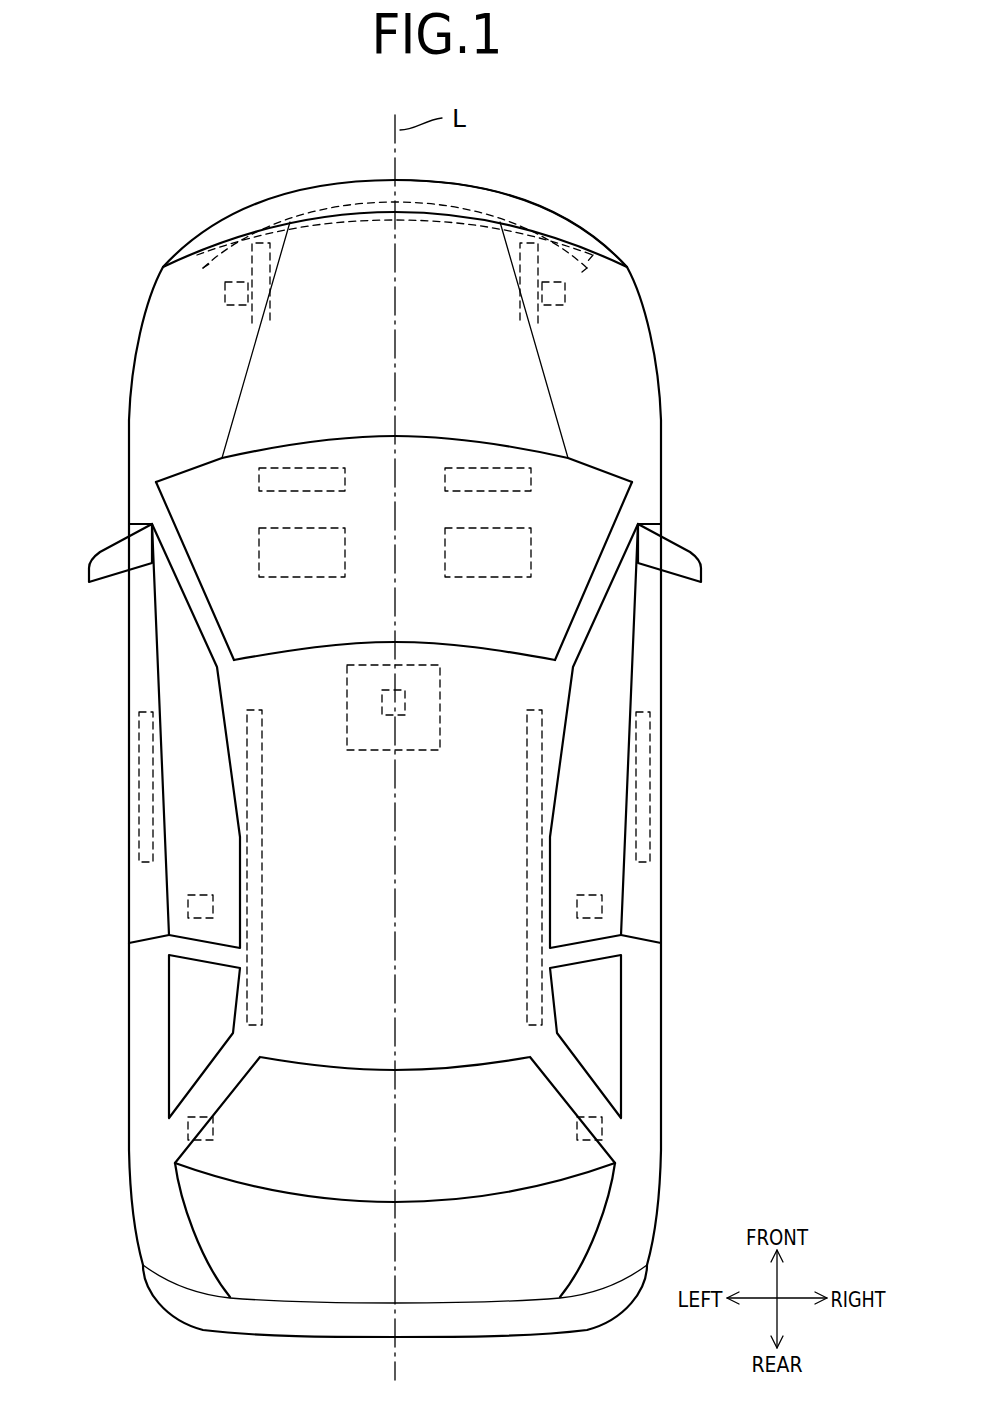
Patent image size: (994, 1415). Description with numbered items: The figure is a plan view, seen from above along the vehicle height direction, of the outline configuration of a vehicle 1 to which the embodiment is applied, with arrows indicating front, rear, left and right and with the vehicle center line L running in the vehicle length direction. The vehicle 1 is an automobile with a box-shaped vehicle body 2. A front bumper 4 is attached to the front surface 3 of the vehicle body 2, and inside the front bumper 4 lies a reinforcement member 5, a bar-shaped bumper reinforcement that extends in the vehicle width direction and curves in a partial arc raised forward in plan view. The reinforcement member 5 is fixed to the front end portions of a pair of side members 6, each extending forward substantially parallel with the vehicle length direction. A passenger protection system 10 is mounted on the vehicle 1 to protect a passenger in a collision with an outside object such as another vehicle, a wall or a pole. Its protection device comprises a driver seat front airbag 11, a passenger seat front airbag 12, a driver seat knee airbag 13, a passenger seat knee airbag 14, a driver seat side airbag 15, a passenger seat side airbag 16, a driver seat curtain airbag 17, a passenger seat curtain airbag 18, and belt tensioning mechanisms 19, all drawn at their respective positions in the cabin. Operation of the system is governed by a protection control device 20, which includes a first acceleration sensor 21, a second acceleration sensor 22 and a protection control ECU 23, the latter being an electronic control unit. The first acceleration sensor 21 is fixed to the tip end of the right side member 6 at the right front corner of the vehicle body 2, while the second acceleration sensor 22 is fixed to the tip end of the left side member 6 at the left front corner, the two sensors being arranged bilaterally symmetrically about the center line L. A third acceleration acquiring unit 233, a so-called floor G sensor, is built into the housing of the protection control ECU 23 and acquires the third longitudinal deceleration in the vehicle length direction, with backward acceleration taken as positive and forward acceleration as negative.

The vehicle 1 is at (705, 345).
The vehicle body 2 is at (662, 884).
The front surface 3 is at (592, 228).
The front bumper 4 is at (300, 198).
The reinforcement member 5 is at (480, 210).
The side members 6 is at (582, 272).
The passenger protection system 10 is at (182, 380).
The driver seat front airbag 11 is at (512, 553).
The passenger seat front airbag 12 is at (272, 549).
The driver seat knee airbag 13 is at (501, 478).
The passenger seat knee airbag 14 is at (307, 478).
The driver seat side airbag 15 is at (643, 775).
The passenger seat side airbag 16 is at (143, 767).
The driver seat curtain airbag 17 is at (540, 720).
The passenger seat curtain airbag 18 is at (243, 718).
The belt tensioning mechanisms 19 is at (187, 907).
The protection control device 20 is at (545, 679).
The first acceleration sensor 21 is at (565, 293).
The second acceleration sensor 22 is at (225, 295).
The protection control ECU 23 is at (422, 752).
The third acceleration acquiring unit 233 is at (405, 700).